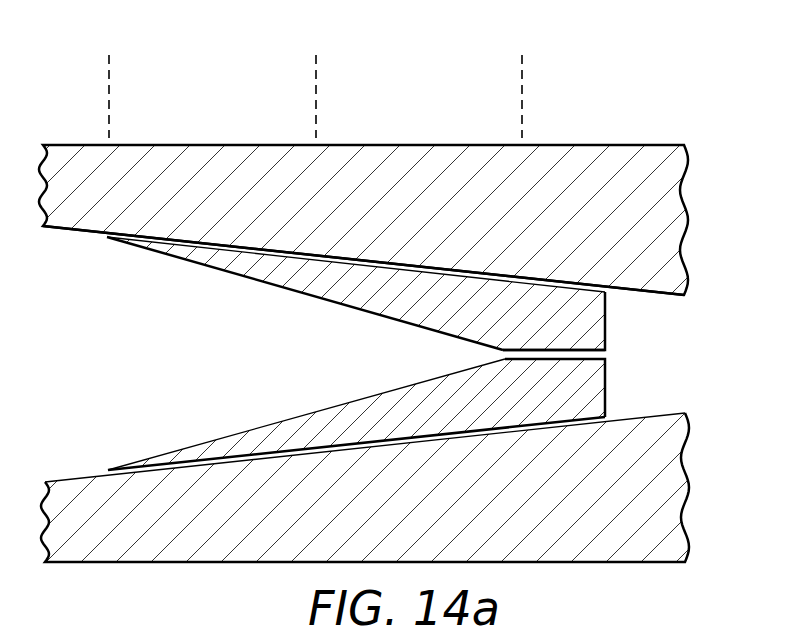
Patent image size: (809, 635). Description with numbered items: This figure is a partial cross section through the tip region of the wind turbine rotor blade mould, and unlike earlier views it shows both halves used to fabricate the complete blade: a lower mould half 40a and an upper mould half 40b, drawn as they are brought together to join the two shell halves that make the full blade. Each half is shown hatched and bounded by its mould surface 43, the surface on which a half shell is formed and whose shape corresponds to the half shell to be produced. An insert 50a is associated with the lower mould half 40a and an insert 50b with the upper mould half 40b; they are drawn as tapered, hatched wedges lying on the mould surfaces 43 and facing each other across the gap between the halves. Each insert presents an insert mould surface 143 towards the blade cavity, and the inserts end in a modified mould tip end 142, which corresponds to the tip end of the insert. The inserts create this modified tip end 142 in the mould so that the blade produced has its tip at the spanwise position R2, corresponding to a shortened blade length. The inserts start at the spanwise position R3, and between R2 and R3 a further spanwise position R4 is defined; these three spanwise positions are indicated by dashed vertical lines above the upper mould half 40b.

The lower mould half 40a is at (400, 487).
The upper mould half 40b is at (400, 220).
The mould surface 43 is at (364, 354).
The insert 50a is at (590, 388).
The insert 50b is at (590, 321).
The modified mould tip end 142 is at (501, 355).
The insert mould surface 143 is at (356, 353).
The spanwise position R2 is at (521, 84).
The spanwise position R3 is at (107, 84).
The spanwise position R4 is at (314, 84).